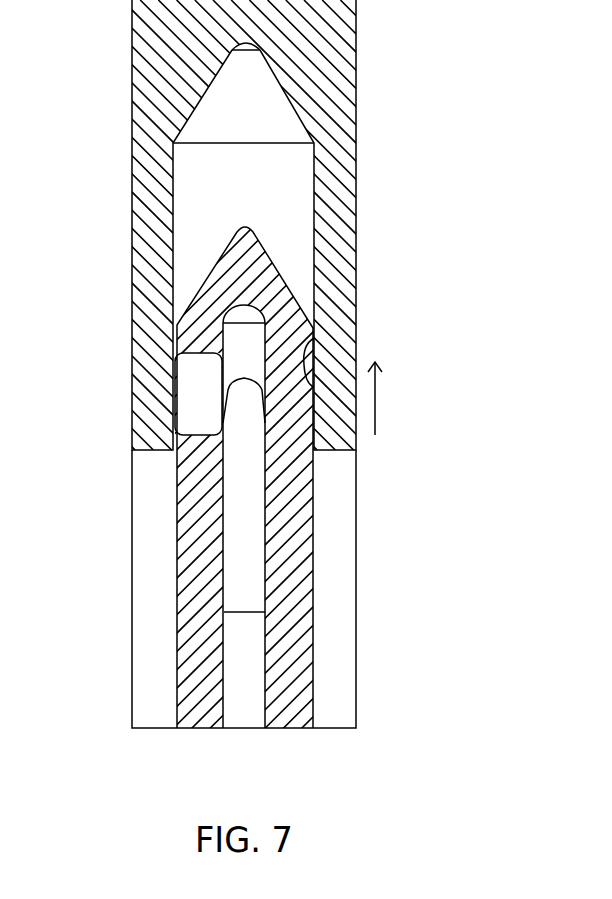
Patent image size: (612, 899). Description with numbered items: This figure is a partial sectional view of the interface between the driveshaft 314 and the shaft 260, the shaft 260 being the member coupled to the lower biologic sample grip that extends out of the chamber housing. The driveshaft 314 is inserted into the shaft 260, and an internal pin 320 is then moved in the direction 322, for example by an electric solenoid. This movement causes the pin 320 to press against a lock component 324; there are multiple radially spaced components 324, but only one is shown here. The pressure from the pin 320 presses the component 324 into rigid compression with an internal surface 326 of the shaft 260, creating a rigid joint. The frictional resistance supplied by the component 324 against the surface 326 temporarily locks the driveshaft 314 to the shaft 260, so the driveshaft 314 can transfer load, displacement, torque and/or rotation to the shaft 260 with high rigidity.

The shaft 260 is at (132, 32).
The driveshaft 314 is at (132, 553).
The internal pin 320 is at (263, 537).
The direction 322 is at (375, 392).
The lock component 324 is at (188, 390).
The internal surface 326 is at (314, 339).